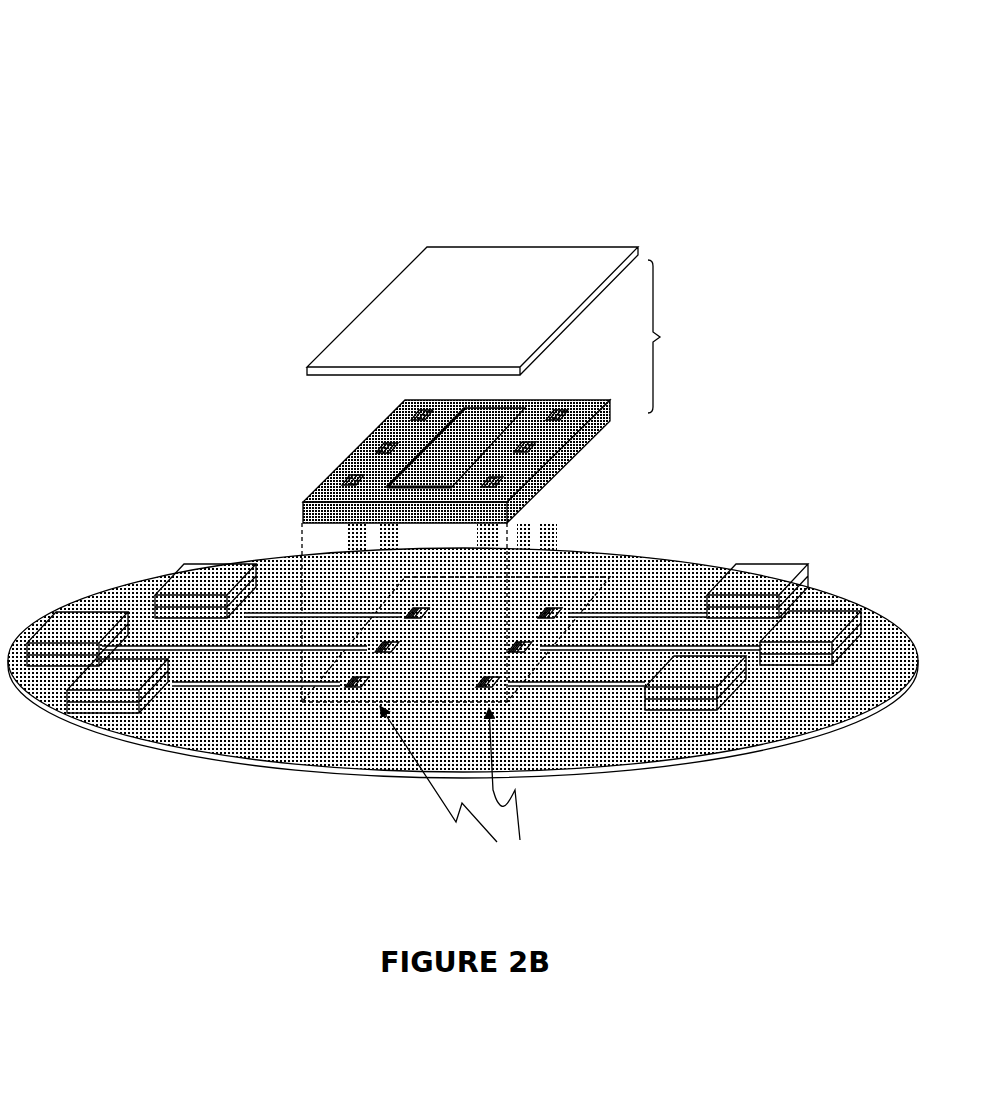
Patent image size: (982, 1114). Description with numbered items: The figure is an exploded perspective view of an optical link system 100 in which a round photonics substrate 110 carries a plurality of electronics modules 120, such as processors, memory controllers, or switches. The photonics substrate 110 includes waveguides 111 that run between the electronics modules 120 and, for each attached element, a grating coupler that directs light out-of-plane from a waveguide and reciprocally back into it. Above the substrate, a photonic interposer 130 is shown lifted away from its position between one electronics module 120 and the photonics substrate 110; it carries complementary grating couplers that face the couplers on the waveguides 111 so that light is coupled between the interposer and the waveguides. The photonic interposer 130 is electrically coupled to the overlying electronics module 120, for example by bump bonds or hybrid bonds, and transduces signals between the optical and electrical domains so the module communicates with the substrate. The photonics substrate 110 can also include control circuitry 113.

The optical link system 100 is at (125, 38).
The photonics substrate 110 is at (683, 593).
The waveguides 111 is at (259, 697).
The control circuitry 113 is at (469, 435).
The electronics modules 120 is at (444, 317).
The photonic interposer 130 is at (576, 608).